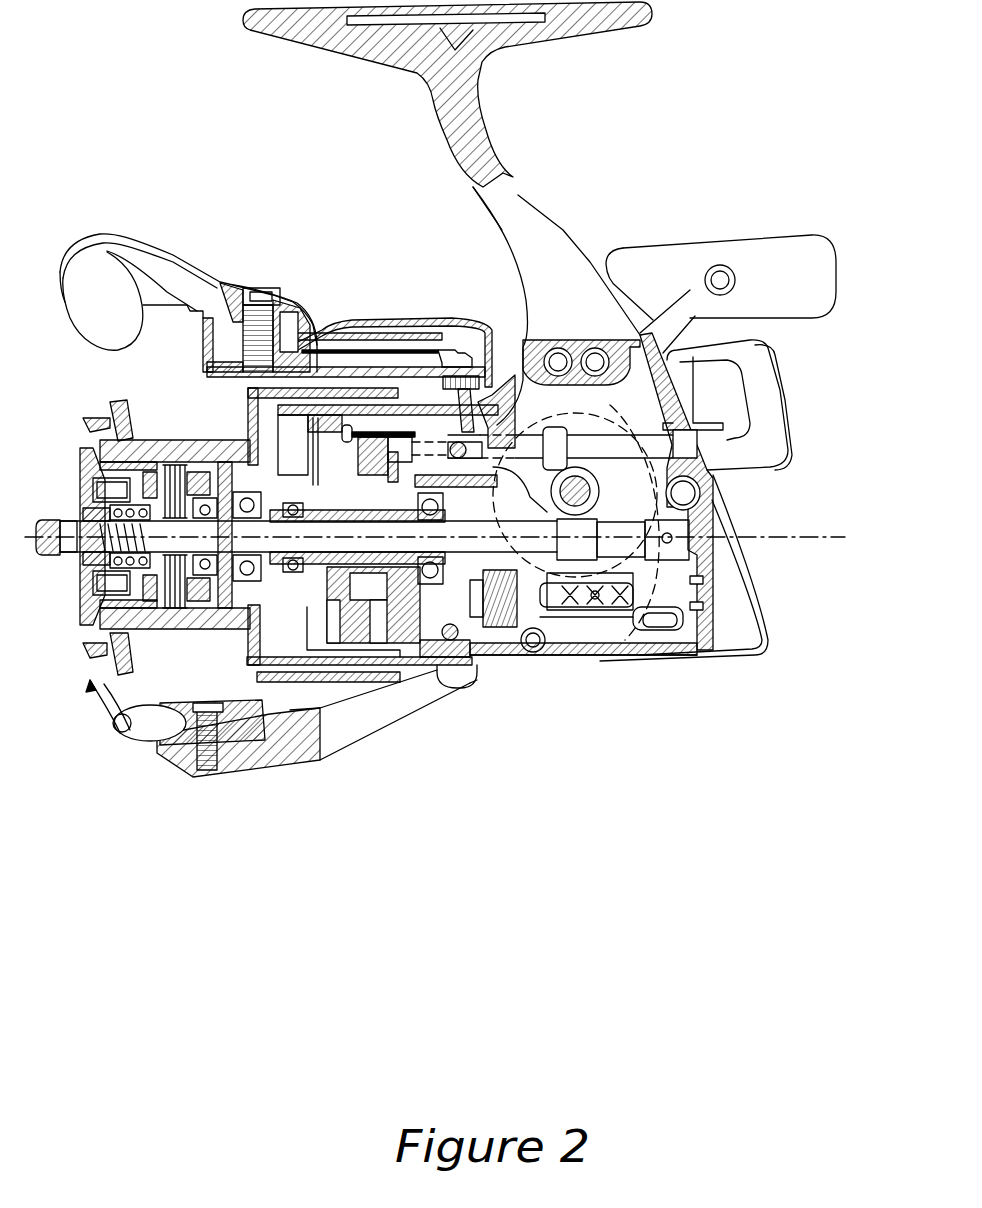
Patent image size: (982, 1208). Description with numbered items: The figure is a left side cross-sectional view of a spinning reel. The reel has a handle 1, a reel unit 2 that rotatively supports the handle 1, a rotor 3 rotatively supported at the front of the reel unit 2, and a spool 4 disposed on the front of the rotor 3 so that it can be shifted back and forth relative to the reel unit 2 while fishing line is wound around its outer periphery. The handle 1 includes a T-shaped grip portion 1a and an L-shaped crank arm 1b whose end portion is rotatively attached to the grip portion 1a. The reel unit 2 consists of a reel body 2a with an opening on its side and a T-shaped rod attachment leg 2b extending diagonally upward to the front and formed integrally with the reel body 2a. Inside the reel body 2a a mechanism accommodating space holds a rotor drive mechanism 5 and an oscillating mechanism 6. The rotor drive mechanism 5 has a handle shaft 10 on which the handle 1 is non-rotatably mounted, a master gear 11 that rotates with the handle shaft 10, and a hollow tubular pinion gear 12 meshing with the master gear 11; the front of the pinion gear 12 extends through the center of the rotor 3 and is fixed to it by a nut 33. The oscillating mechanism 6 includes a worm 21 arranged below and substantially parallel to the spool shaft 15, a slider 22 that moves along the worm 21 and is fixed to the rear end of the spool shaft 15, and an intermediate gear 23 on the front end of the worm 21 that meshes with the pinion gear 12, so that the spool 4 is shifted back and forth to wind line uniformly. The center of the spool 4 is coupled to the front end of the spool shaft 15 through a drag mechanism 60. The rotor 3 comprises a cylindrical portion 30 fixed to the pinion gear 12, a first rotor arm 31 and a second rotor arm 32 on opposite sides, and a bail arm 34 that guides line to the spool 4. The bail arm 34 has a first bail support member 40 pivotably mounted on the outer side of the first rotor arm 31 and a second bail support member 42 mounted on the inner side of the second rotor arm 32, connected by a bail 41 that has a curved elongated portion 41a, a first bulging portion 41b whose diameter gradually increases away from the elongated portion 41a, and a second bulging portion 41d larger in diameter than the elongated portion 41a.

The handle 1 is at (685, 292).
The grip portion 1a is at (747, 247).
The crank arm 1b is at (655, 360).
The reel unit 2 is at (768, 535).
The reel body 2a is at (717, 487).
The rod attachment leg 2b is at (530, 280).
The rotor 3 is at (363, 687).
The spool 4 is at (172, 634).
The rotor drive mechanism 5 is at (609, 475).
The oscillating mechanism 6 is at (599, 636).
The handle shaft 10 is at (552, 432).
The master gear 11 is at (626, 660).
The pinion gear 12 is at (462, 598).
The spool shaft 15 is at (647, 608).
The worm 21 is at (628, 632).
The slider 22 is at (660, 615).
The intermediate gear 23 is at (505, 622).
The cylindrical portion 30 is at (387, 685).
The first rotor arm 31 is at (290, 368).
The second rotor arm 32 is at (277, 757).
The nut 33 is at (300, 488).
The bail arm 34 is at (101, 366).
The first bail support member 40 is at (178, 270).
The bail 41 is at (97, 720).
The elongated portion 41a is at (168, 387).
The first bulging portion 41b is at (170, 382).
The second bulging portion 41d is at (130, 733).
The second bail support member 42 is at (153, 737).
The drag mechanism 60 is at (207, 452).